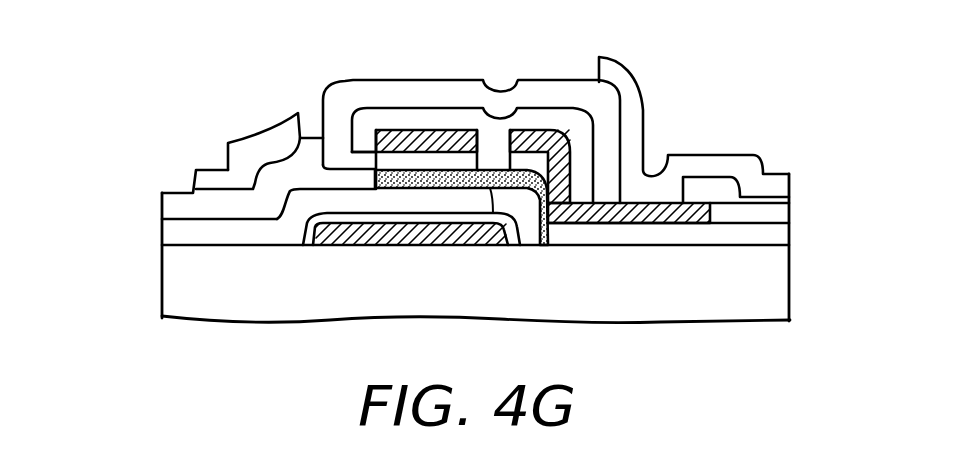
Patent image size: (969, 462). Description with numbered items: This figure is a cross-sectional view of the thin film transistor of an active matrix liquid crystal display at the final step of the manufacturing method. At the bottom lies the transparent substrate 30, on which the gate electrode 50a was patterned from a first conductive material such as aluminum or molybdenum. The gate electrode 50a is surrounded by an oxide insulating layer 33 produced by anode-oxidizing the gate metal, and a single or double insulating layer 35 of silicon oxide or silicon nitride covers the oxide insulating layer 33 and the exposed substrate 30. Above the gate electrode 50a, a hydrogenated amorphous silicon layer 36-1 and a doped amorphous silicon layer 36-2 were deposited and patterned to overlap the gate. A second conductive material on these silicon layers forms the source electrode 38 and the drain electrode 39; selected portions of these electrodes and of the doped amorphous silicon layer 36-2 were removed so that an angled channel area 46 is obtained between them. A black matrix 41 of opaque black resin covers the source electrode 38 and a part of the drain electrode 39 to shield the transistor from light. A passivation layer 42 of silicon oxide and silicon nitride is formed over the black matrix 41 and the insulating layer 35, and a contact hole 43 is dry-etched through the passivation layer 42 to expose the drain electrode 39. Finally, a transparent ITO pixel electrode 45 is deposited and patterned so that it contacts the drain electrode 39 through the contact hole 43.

The transparent substrate 30 is at (732, 287).
The oxide insulating layer 33 is at (307, 223).
The insulating layer 35 is at (187, 232).
The hydrogenated amorphous silicon layer 36-1 is at (240, 140).
The doped amorphous silicon layer 36-2 is at (383, 157).
The source electrode 38 is at (377, 150).
The drain electrode 39 is at (567, 143).
The black matrix 41 is at (435, 113).
The passivation layer 42 is at (202, 203).
The contact hole 43 is at (653, 158).
The pixel electrode 45 is at (360, 183).
The channel area 46 is at (492, 180).
The gate electrode 50a is at (390, 243).